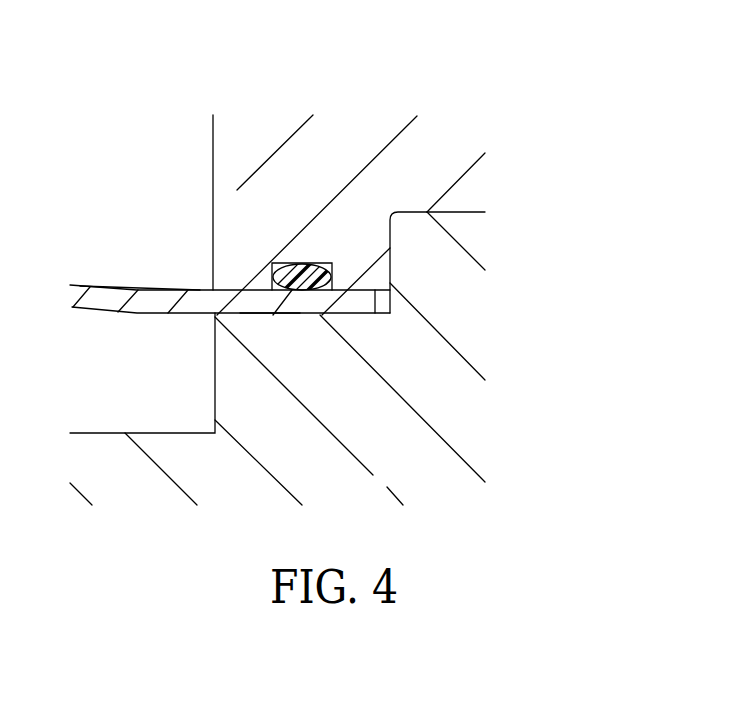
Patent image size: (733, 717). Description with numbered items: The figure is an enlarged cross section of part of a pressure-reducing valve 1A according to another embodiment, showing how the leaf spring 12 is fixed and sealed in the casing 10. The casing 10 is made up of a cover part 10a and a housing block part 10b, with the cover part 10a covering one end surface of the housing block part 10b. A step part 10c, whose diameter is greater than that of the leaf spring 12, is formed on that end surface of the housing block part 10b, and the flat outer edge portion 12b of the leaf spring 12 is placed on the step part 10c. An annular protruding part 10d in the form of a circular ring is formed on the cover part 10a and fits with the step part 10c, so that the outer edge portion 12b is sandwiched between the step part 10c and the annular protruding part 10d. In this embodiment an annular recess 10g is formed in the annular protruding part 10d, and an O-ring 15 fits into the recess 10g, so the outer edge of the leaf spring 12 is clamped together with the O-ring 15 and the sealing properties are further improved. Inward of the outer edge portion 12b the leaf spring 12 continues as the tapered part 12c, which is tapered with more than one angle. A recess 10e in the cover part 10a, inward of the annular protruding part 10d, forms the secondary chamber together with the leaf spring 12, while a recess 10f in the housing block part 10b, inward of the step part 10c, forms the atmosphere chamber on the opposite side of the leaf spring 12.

The pressure-reducing valve 1A is at (416, 79).
The casing 10 is at (572, 160).
The cover part 10a is at (468, 189).
The housing block part 10b is at (468, 255).
The step part 10c is at (347, 412).
The annular protruding part 10d is at (302, 223).
The recess 10e is at (213, 168).
The recess 10f is at (215, 365).
The recess 10g is at (277, 263).
The leaf spring 12 is at (97, 305).
The outer edge portion 12b is at (268, 312).
The tapered part 12c is at (108, 291).
The O-ring 15 is at (333, 290).